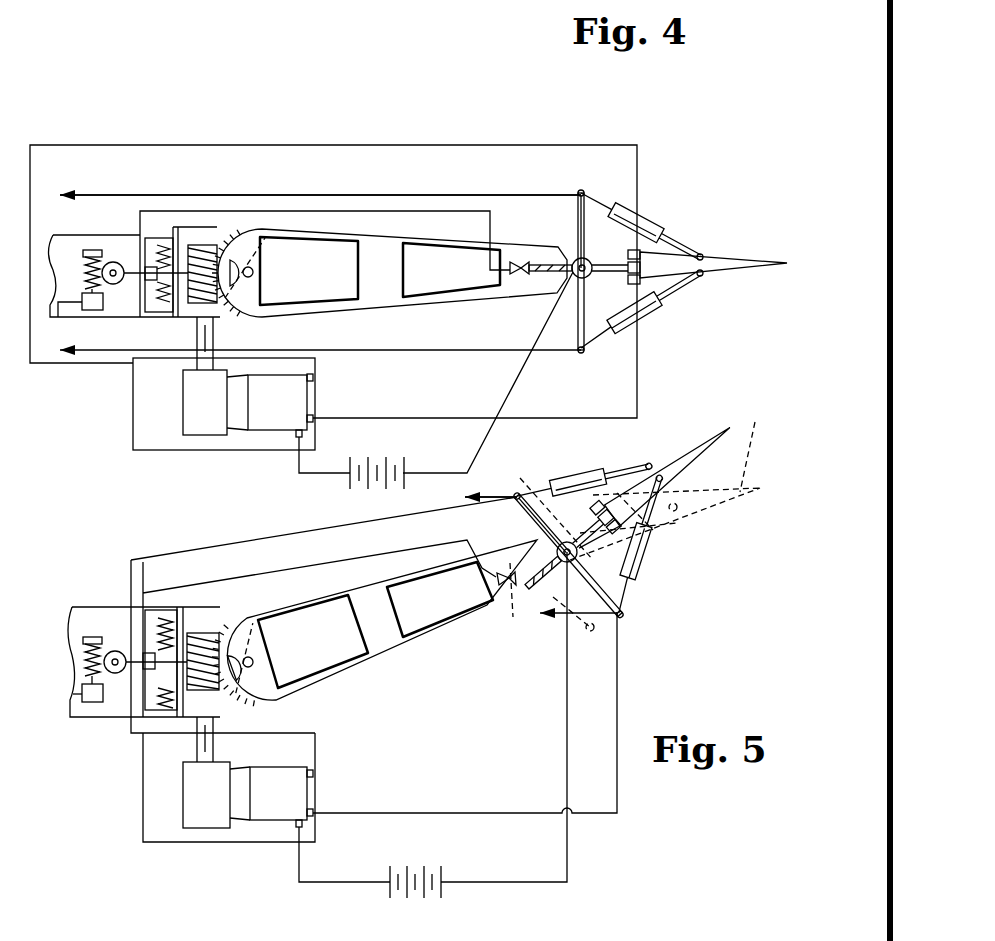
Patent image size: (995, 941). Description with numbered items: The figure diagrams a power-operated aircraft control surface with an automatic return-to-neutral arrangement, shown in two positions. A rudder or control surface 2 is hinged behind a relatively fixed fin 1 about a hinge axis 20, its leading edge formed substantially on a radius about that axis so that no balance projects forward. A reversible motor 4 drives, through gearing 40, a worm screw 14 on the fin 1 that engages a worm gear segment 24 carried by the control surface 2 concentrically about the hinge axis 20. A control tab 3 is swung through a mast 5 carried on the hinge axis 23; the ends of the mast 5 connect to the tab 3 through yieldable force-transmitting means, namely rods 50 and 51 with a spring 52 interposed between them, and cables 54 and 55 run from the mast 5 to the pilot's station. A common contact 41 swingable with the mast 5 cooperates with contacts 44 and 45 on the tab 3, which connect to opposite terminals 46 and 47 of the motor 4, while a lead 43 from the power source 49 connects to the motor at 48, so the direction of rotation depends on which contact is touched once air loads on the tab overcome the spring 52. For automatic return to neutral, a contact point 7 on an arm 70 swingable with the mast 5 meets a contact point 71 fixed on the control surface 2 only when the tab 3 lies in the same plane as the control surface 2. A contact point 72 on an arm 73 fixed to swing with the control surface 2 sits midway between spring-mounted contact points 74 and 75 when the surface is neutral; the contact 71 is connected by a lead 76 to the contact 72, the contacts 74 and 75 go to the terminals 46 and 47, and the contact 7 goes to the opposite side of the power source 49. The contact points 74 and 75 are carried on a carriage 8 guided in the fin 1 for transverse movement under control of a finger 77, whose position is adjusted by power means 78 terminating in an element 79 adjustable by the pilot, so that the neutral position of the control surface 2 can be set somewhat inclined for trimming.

In FIG. 4, the fin 1 is at (60, 314).
In FIG. 5, the fin 1 is at (95, 715).
In FIG. 4, the rudder 2 is at (372, 300).
In FIG. 5, the rudder 2 is at (388, 655).
In FIG. 4, the control tab 3 is at (748, 258).
In FIG. 5, the control tab 3 is at (728, 432).
In FIG. 4, the motor 4 is at (267, 402).
In FIG. 5, the motor 4 is at (268, 793).
In FIG. 4, the mast 5 is at (586, 194).
In FIG. 5, the mast 5 is at (620, 614).
In FIG. 4, the contact point 7 is at (520, 263).
In FIG. 5, the contact point 7 is at (506, 584).
In FIG. 4, the carriage 8 is at (156, 240).
In FIG. 5, the carriage 8 is at (152, 612).
In FIG. 4, the worm screw 14 is at (222, 302).
In FIG. 5, the worm screw 14 is at (230, 622).
In FIG. 4, the hinge axis 20 is at (252, 266).
In FIG. 5, the hinge axis 20 is at (254, 660).
In FIG. 4, the hinge axis 23 is at (576, 258).
In FIG. 5, the hinge axis 23 is at (555, 556).
In FIG. 4, the worm gear segment 24 is at (262, 314).
In FIG. 5, the worm gear segment 24 is at (250, 705).
In FIG. 4, the gearing 40 is at (205, 402).
In FIG. 5, the gearing 40 is at (206, 795).
In FIG. 4, the electrical contact 41 is at (642, 280).
In FIG. 5, the electrical contact 41 is at (612, 522).
In FIG. 4, the lead 43 is at (305, 478).
In FIG. 5, the lead 43 is at (336, 885).
In FIG. 4, the contact 44 is at (645, 256).
In FIG. 5, the contact 44 is at (600, 510).
In FIG. 4, the contact 45 is at (650, 310).
In FIG. 5, the contact 45 is at (648, 488).
In FIG. 4, the motor terminal 46 is at (314, 378).
In FIG. 5, the motor terminal 46 is at (314, 773).
In FIG. 4, the motor terminal 47 is at (314, 418).
In FIG. 5, the motor terminal 47 is at (314, 812).
In FIG. 4, the motor connection 48 is at (298, 438).
In FIG. 5, the motor connection 48 is at (298, 830).
In FIG. 4, the power source 49 is at (386, 463).
In FIG. 5, the power source 49 is at (425, 870).
In FIG. 4, the rod 50 is at (612, 205).
In FIG. 5, the rod 50 is at (634, 592).
In FIG. 4, the rod 51 is at (683, 240).
In FIG. 5, the rod 51 is at (660, 518).
In FIG. 4, the spring 52 is at (660, 218).
In FIG. 5, the spring 52 is at (650, 552).
In FIG. 4, the cable 54 is at (497, 193).
In FIG. 5, the cable 54 is at (490, 497).
In FIG. 4, the cable 55 is at (520, 350).
In FIG. 5, the cable 55 is at (595, 615).
In FIG. 4, the arm 70 is at (550, 272).
In FIG. 5, the arm 70 is at (543, 572).
In FIG. 4, the contact point 71 is at (512, 276).
In FIG. 5, the contact point 71 is at (500, 585).
In FIG. 4, the contact point 72 is at (190, 300).
In FIG. 5, the contact point 72 is at (150, 700).
In FIG. 4, the arm 73 is at (172, 245).
In FIG. 5, the arm 73 is at (178, 628).
In FIG. 4, the spring-mounted contact point 74 is at (150, 262).
In FIG. 5, the spring-mounted contact point 74 is at (148, 652).
In FIG. 4, the spring-mounted contact point 75 is at (150, 283).
In FIG. 5, the spring-mounted contact point 75 is at (170, 693).
In FIG. 4, the lead 76 is at (393, 211).
In FIG. 5, the lead 76 is at (332, 562).
In FIG. 4, the finger 77 is at (130, 276).
In FIG. 5, the finger 77 is at (128, 668).
In FIG. 4, the power means 78 is at (88, 252).
In FIG. 5, the power means 78 is at (86, 657).
In FIG. 4, the adjustable element 79 is at (55, 306).
In FIG. 5, the adjustable element 79 is at (75, 700).